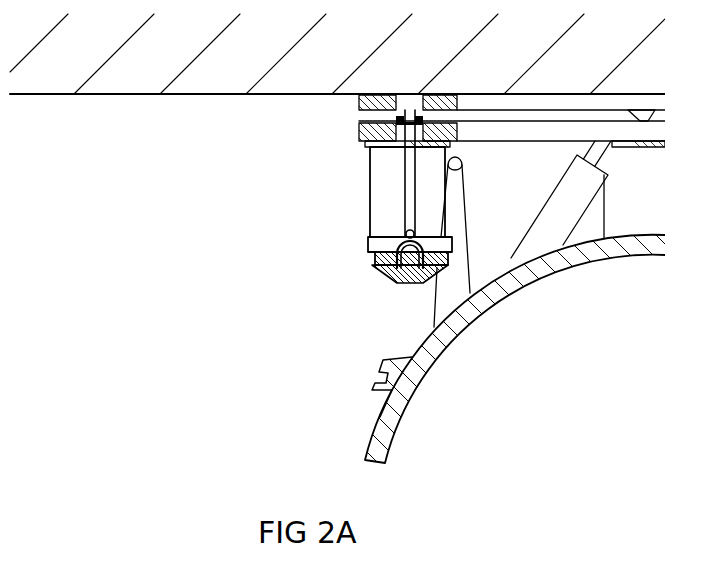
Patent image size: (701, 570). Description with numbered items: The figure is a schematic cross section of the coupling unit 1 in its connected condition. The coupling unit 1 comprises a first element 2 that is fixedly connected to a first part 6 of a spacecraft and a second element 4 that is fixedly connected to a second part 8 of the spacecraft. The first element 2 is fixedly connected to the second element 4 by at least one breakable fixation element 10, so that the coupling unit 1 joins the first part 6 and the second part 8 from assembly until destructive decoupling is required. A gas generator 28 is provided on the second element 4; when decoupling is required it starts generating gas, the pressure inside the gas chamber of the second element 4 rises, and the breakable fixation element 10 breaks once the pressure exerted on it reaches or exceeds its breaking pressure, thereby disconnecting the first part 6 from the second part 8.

The first part of a spacecraft 6 is at (337, 91).
The first element 2 is at (390, 116).
The breakable fixation element 10 is at (386, 135).
The second element 4 is at (364, 194).
The coupling unit 1 is at (330, 236).
The gas generator 28 is at (370, 270).
The second part of a spacecraft 8 is at (428, 408).